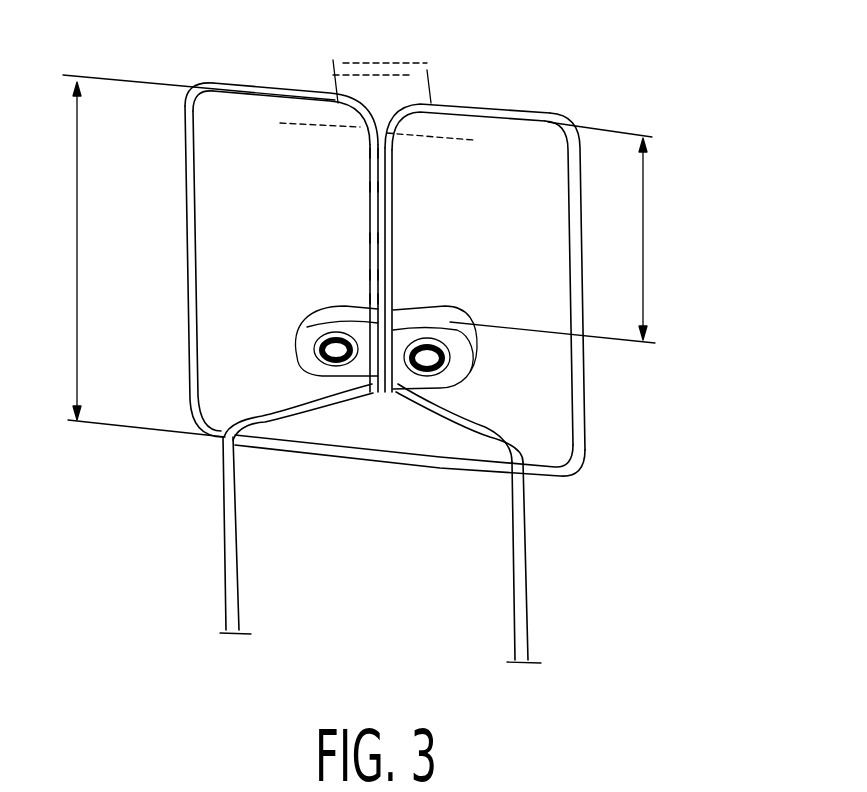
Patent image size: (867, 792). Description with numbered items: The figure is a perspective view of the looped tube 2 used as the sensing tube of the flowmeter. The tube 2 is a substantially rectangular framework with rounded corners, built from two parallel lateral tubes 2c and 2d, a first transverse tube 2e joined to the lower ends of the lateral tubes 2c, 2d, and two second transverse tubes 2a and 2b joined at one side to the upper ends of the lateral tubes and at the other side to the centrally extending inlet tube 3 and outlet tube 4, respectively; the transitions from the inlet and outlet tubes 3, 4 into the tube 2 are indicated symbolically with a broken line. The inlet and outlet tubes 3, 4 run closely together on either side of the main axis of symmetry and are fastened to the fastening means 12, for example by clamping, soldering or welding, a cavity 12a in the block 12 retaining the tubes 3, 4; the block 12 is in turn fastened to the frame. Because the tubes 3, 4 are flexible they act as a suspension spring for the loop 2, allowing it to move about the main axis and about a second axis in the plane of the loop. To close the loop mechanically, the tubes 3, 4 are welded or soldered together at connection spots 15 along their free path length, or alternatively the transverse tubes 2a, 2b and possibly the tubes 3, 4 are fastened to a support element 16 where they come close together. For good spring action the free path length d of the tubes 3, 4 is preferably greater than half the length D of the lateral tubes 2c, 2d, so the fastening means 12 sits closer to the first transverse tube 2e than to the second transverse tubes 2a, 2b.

The looped tube 2 is at (567, 112).
The second transverse tube 2a is at (253, 84).
The second transverse tube 2b is at (468, 104).
The lateral tube 2c is at (192, 222).
The lateral tube 2d is at (575, 248).
The first transverse tube 2e is at (363, 458).
The inlet tube 3 is at (370, 211).
The outlet tube 4 is at (393, 217).
The fastening means 12 is at (480, 367).
The cavity 12a is at (345, 377).
The connection spots 15 is at (370, 153).
The support element 16 is at (385, 83).
The length of the lateral tubes D is at (76, 225).
The free path length d is at (650, 255).